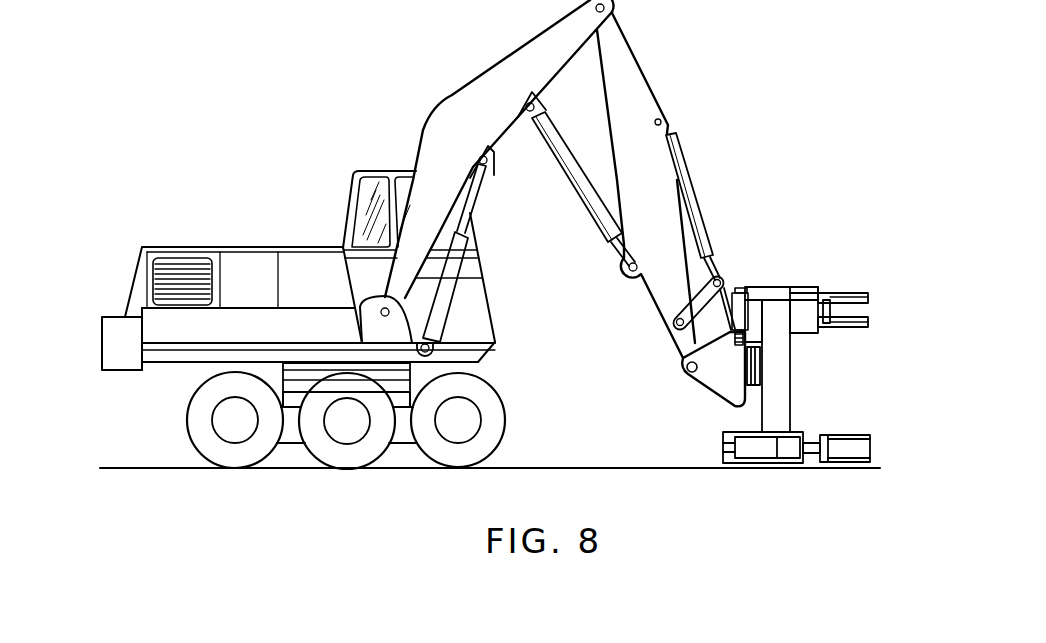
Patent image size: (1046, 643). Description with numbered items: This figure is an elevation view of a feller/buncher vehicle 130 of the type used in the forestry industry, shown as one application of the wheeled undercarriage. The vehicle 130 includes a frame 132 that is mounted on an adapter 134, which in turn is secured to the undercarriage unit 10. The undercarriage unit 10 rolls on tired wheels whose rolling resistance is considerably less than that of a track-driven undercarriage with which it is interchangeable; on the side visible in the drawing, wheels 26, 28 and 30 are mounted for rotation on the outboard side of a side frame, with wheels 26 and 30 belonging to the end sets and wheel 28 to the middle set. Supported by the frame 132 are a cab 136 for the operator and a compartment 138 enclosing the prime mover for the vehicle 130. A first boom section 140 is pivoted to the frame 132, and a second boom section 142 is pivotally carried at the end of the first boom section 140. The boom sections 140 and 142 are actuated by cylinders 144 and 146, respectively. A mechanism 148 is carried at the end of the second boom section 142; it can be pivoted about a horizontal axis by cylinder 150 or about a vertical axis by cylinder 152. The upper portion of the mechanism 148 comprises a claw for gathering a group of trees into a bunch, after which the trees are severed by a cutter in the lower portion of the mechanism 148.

The undercarriage unit 10 is at (295, 452).
The wheel 26 is at (197, 418).
The wheel 28 is at (375, 450).
The wheel 30 is at (492, 430).
The feller/buncher vehicle 130 is at (378, 133).
The frame 132 is at (173, 352).
The adapter 134 is at (305, 380).
The cab 136 is at (475, 287).
The compartment 138 is at (303, 265).
The first boom section 140 is at (495, 80).
The second boom section 142 is at (632, 88).
The cylinder 144 is at (437, 315).
The cylinder 146 is at (577, 188).
The mechanism 148 is at (772, 393).
The cylinder 150 is at (682, 185).
The cylinder 152 is at (743, 287).